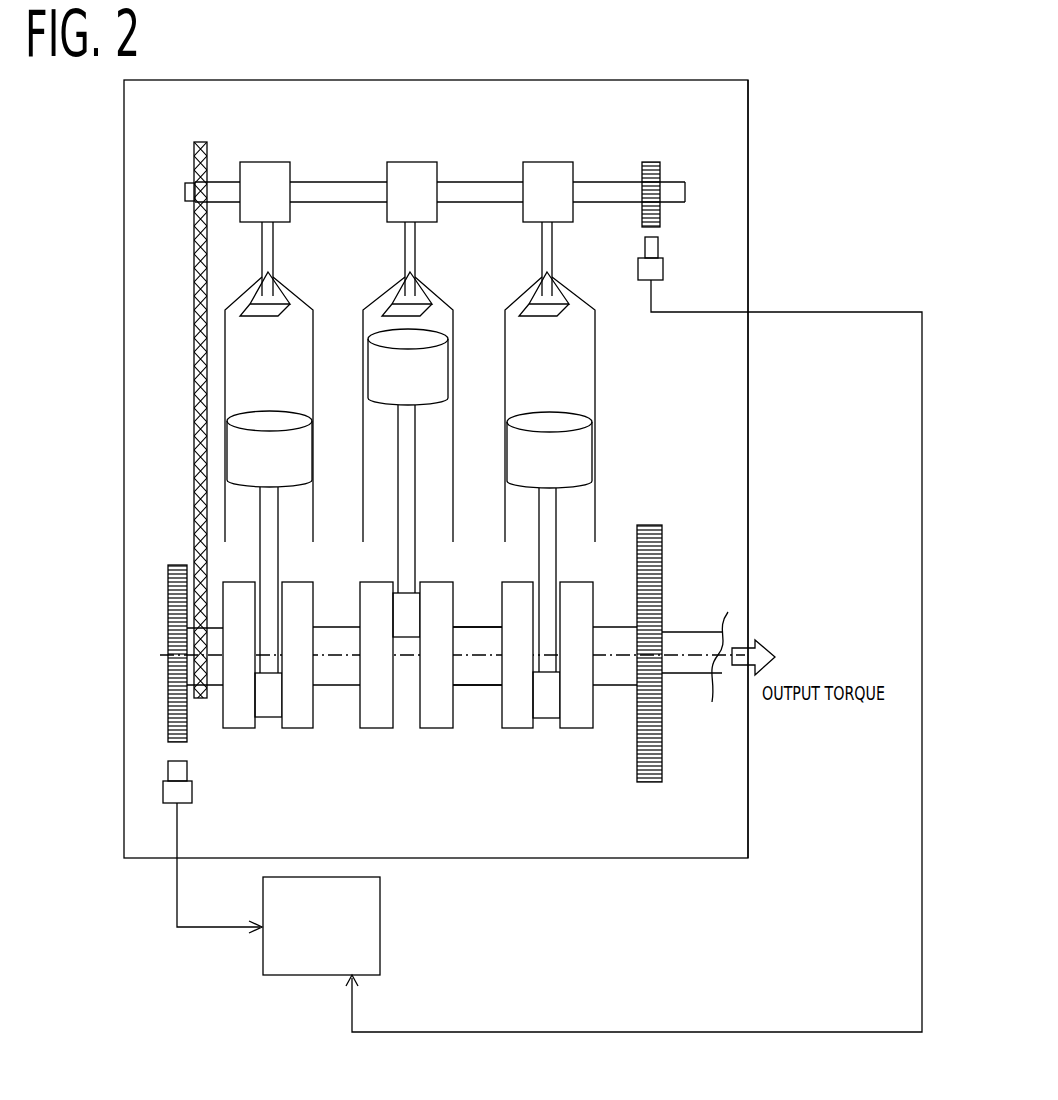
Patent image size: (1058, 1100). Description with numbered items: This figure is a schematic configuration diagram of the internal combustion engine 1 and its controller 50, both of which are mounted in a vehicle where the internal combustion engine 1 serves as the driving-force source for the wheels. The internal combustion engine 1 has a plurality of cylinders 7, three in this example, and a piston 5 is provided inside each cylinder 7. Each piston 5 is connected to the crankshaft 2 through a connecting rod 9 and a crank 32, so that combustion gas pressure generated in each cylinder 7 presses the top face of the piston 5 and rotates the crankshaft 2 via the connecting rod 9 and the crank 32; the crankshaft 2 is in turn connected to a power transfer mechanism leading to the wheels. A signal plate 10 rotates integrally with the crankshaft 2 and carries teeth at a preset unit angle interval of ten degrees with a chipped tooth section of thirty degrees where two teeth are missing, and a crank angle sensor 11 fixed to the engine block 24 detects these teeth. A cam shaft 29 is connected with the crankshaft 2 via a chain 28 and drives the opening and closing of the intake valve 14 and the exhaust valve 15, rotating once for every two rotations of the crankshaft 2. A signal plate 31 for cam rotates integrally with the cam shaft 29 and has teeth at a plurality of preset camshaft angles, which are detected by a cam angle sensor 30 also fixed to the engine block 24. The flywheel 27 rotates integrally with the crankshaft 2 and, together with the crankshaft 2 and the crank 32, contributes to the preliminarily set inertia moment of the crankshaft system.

The internal combustion engine 1 is at (123, 200).
The crankshaft 2 is at (337, 685).
The piston 5 is at (548, 422).
The cylinder 7 is at (595, 352).
The connecting rod 9 is at (560, 555).
The signal plate 10 is at (172, 565).
The crank angle sensor 11 is at (163, 790).
The intake valve 14 is at (553, 287).
The exhaust valve 15 is at (530, 303).
The engine block 24 is at (747, 423).
The flywheel 27 is at (663, 590).
The chain 28 is at (194, 418).
The cam shaft 29 is at (327, 180).
The cam angle sensor 30 is at (663, 268).
The signal plate for cam 31 is at (650, 162).
The crank 32 is at (455, 605).
The controller 50 is at (263, 951).